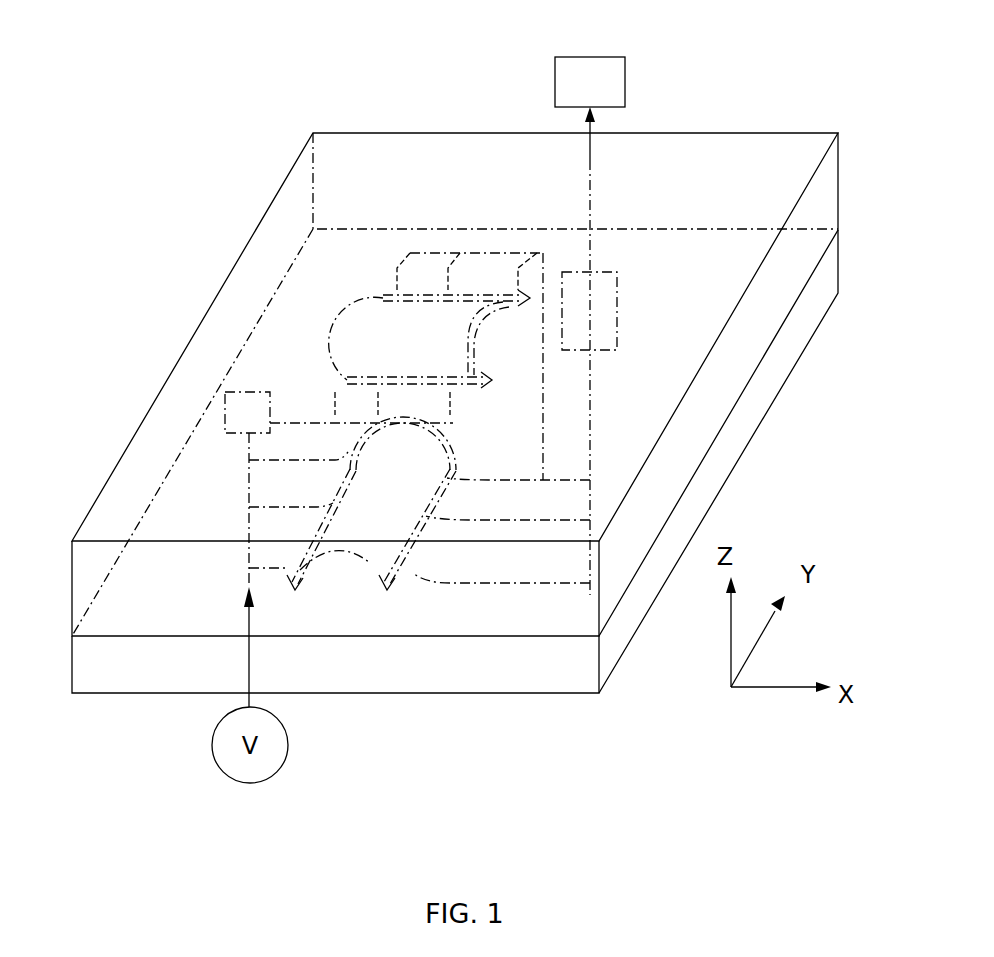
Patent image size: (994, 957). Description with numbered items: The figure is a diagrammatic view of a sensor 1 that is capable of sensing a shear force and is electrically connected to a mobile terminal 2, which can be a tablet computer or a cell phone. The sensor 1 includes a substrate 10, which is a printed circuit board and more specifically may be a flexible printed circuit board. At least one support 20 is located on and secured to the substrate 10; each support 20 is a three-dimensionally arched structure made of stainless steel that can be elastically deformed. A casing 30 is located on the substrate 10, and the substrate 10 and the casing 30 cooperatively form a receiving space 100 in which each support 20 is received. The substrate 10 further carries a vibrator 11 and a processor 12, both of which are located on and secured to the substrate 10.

The sensor 1 is at (266, 92).
The mobile terminal 2 is at (605, 75).
The substrate 10 is at (518, 683).
The vibrator 11 is at (225, 395).
The processor 12 is at (612, 345).
The support 20 is at (318, 565).
The casing 30 is at (740, 138).
The receiving space 100 is at (253, 292).